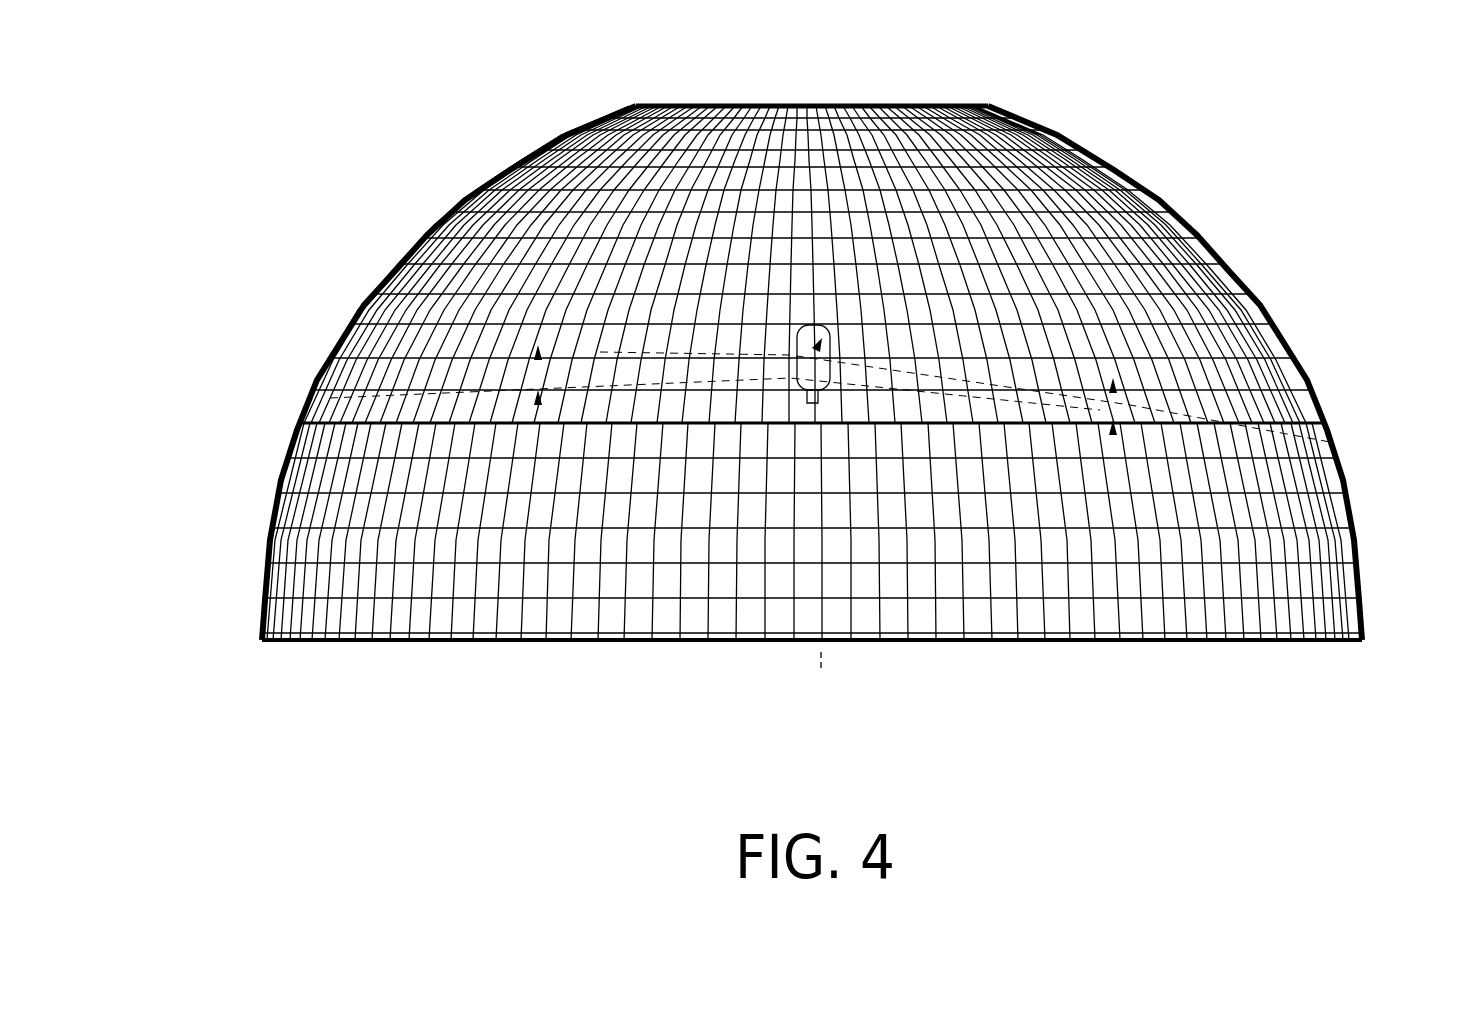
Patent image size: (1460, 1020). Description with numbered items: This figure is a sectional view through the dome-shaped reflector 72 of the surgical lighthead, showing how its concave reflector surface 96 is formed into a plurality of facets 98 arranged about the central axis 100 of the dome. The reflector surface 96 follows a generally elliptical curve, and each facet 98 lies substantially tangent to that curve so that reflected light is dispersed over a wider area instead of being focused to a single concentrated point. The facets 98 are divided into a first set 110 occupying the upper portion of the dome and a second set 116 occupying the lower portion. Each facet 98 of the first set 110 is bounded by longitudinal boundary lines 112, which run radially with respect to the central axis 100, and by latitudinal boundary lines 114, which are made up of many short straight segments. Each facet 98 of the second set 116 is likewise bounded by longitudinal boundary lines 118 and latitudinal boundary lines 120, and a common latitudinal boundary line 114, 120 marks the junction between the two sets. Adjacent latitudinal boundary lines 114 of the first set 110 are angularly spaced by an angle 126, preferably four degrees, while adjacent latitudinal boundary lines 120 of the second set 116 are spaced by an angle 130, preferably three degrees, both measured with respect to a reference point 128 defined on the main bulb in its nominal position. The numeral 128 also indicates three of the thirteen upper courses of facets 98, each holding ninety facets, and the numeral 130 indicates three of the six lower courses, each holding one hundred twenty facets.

The reflector 72 is at (500, 177).
The concave reflector surface 96 is at (280, 582).
The facets 98 is at (425, 262).
The central axis 100 is at (836, 664).
The first set of facets 110 is at (1002, 101).
The longitudinal boundary lines 112 is at (977, 222).
The latitudinal boundary lines 114 is at (721, 178).
The second set of facets 116 is at (1384, 637).
The longitudinal boundary lines 118 is at (1045, 520).
The latitudinal boundary lines 120 is at (700, 603).
The angle 126 is at (378, 312).
The reference point 128 is at (817, 342).
The angle 130 is at (250, 543).